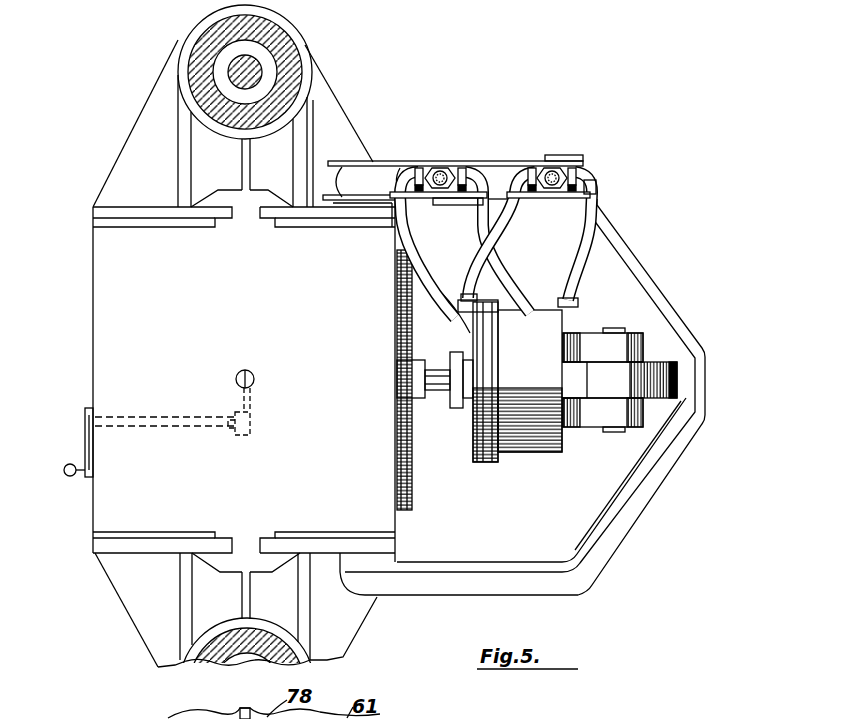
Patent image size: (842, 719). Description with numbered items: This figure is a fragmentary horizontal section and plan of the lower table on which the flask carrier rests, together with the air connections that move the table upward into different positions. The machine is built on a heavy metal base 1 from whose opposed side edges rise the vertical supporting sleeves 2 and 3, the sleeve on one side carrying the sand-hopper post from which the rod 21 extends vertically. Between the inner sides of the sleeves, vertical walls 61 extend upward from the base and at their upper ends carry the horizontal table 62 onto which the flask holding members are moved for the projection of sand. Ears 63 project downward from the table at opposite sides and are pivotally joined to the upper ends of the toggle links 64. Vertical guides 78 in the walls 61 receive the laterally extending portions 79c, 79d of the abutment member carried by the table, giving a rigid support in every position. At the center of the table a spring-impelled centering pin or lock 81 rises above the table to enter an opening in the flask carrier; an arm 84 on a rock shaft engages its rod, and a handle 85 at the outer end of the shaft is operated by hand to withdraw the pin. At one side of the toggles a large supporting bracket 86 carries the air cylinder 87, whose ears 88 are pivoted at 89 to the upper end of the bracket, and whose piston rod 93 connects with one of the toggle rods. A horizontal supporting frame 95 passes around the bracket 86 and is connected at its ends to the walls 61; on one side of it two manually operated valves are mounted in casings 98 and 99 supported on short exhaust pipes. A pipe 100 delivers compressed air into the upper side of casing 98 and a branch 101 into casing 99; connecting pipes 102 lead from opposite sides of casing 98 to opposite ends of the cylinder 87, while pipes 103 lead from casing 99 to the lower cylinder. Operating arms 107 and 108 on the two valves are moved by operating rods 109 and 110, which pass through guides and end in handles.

The base 1 is at (367, 161).
The supporting sleeve 2 is at (253, 633).
The supporting sleeve 3 is at (235, 117).
The rod 21 is at (262, 57).
The vertical walls 61 is at (325, 213).
The table 62 is at (101, 263).
The ears 63 is at (395, 264).
The toggle links 64 is at (405, 286).
The vertical guides 78 is at (232, 193).
The upper T-slot 79c is at (246, 212).
The lower T-slot 79d is at (244, 543).
The centering pin or lock 81 is at (255, 381).
The arm 84 is at (250, 401).
The handle 85 is at (84, 437).
The supporting bracket 86 is at (675, 362).
The cylinder 87 is at (535, 437).
The ears 88 is at (589, 342).
The pivot 89 is at (613, 425).
The piston rod 93 is at (442, 385).
The horizontal supporting frame 95 is at (697, 400).
The valve casing 98 is at (582, 185).
The valve casing 99 is at (461, 169).
The pipe 100 is at (552, 188).
The branch 101 is at (441, 170).
The connecting pipes 102 is at (572, 262).
The pipes 103 is at (473, 218).
The operating arm 107 is at (572, 158).
The operating arm 108 is at (462, 209).
The operating rod 109 is at (514, 162).
The operating rod 110 is at (367, 199).